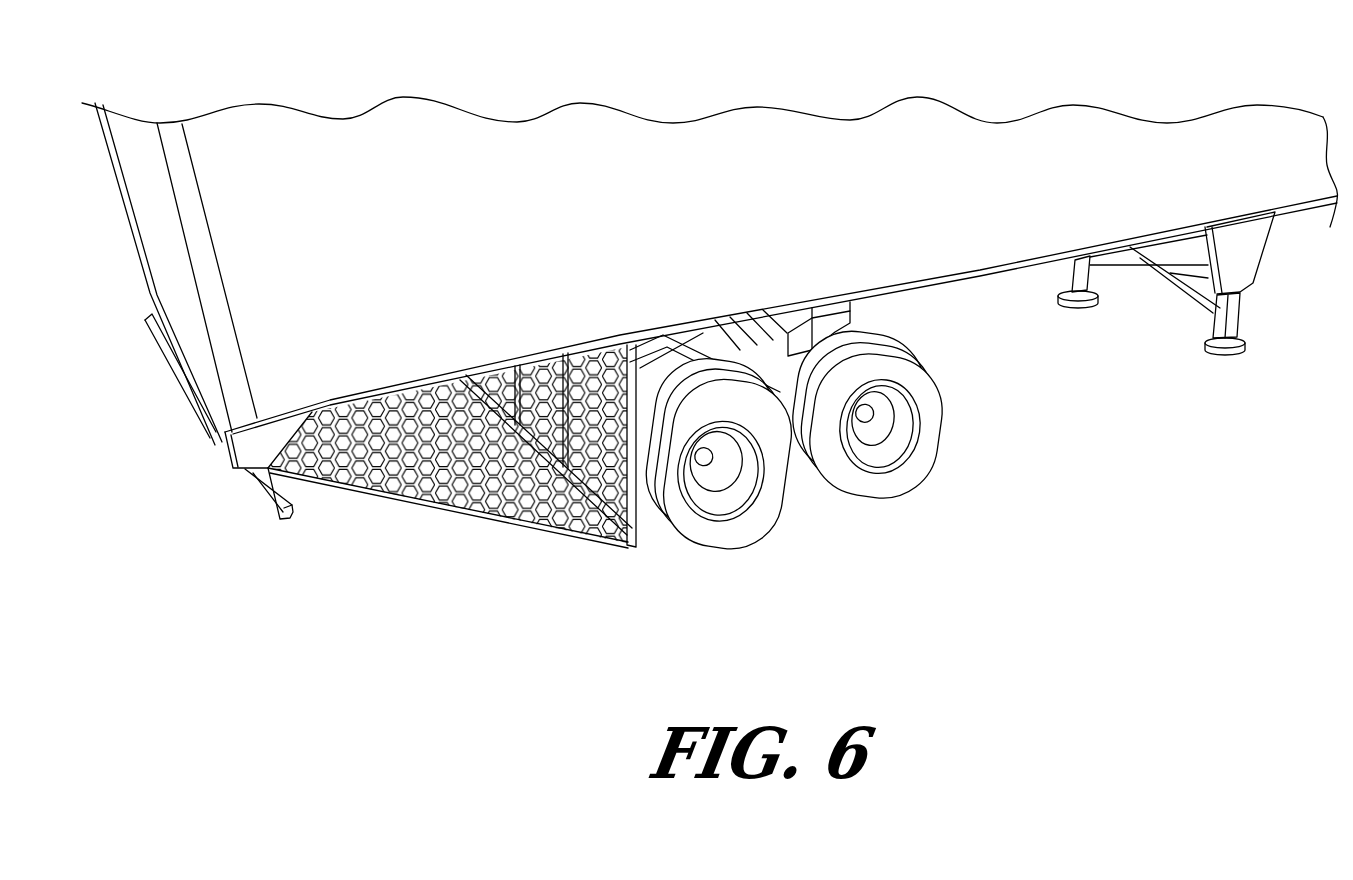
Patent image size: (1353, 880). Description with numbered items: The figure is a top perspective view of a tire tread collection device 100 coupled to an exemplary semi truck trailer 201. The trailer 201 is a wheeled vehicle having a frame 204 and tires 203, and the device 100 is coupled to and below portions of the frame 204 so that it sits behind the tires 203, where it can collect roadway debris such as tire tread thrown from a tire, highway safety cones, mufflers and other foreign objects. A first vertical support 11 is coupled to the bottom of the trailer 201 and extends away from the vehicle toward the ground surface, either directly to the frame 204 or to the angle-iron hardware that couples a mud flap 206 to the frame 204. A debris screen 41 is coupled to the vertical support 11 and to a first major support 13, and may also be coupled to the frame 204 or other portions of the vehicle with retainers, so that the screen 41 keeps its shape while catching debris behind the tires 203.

The truck trailer 201 is at (761, 126).
The frame 204 is at (695, 327).
The tires 203 is at (750, 513).
The tire tread collection device 100 is at (466, 443).
The debris screen 41 is at (480, 467).
The first major support 13 is at (393, 495).
The first vertical support 11 is at (645, 343).
The mud flap 206 is at (503, 390).